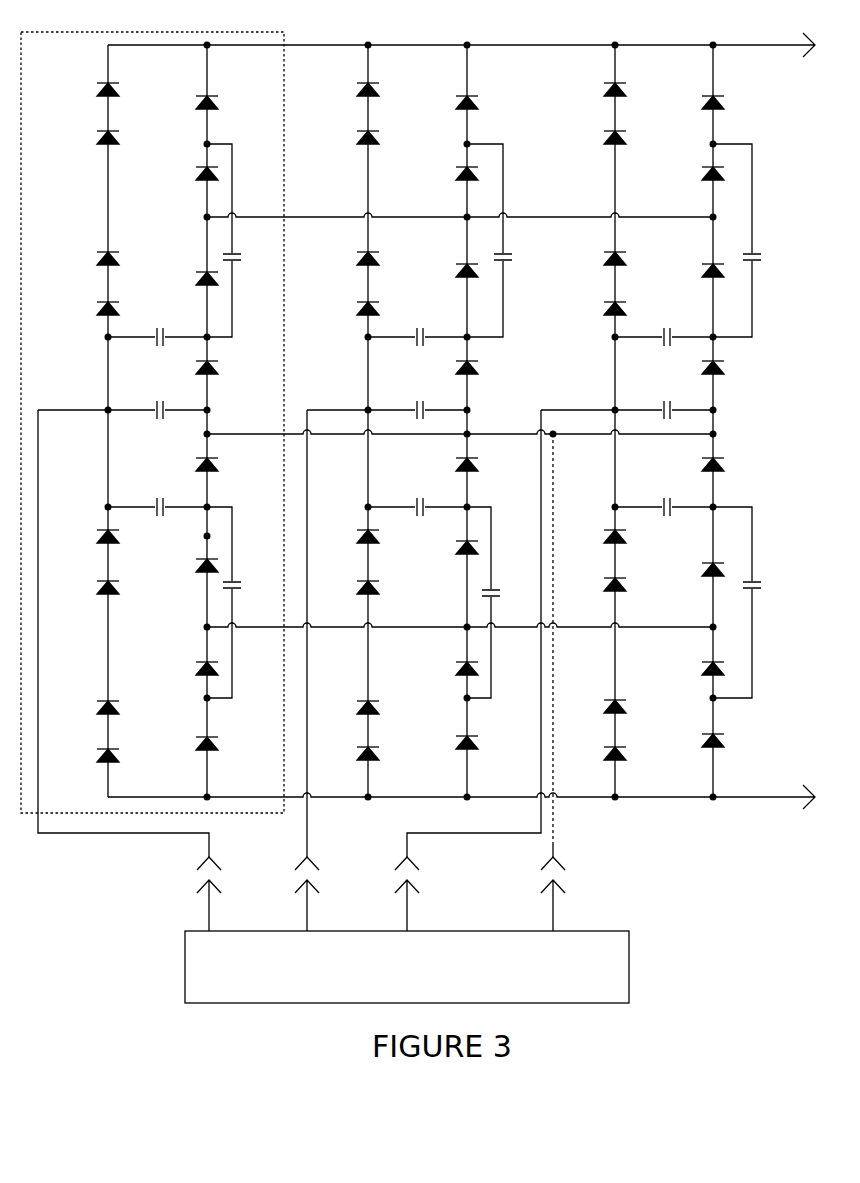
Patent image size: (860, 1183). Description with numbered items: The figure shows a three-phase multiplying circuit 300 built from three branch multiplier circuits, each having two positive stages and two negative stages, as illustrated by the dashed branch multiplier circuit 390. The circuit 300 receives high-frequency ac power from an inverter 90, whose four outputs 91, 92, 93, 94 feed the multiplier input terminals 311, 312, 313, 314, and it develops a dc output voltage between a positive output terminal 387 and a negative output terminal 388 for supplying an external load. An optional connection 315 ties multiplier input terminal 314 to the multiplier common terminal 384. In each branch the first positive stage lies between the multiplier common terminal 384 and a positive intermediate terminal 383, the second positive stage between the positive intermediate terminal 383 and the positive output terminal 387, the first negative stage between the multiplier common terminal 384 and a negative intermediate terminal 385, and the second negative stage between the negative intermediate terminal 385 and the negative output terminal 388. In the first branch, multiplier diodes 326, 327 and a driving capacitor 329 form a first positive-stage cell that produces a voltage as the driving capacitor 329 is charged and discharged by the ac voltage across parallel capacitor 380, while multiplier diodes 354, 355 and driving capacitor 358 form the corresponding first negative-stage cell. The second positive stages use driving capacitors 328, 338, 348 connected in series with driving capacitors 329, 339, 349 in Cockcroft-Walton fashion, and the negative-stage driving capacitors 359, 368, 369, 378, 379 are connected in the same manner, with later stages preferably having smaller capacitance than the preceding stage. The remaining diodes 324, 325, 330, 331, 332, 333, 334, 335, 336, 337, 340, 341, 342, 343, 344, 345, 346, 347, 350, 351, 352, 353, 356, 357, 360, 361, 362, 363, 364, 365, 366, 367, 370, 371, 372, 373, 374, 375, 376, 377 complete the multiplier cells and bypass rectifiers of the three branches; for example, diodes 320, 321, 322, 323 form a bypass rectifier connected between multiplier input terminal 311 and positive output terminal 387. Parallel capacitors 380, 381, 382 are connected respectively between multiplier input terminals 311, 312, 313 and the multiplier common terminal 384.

The three-phase multiplying circuit 300 is at (689, 860).
The inverter 90 is at (185, 957).
The AC output 91 is at (208, 922).
The AC output 92 is at (306, 922).
The AC output 93 is at (406, 922).
The AC output 94 is at (552, 922).
The multiplier input terminal 311 is at (207, 857).
The multiplier input terminal 312 is at (306, 857).
The multiplier input terminal 313 is at (404, 857).
The multiplier input terminal 314 is at (552, 857).
The optional connection 315 is at (556, 808).
The diode 320 is at (97, 90).
The diode 321 is at (97, 138).
The diode 322 is at (97, 259).
The diode 323 is at (97, 309).
The diode 324 is at (196, 103).
The diode 325 is at (196, 174).
The multiplier diode 326 is at (196, 279).
The multiplier diode 327 is at (196, 368).
The driving capacitor 328 is at (235, 254).
The driving capacitor 329 is at (153, 330).
The diode 330 is at (357, 90).
The diode 331 is at (357, 138).
The diode 332 is at (357, 259).
The diode 333 is at (357, 309).
The diode 334 is at (456, 103).
The diode 335 is at (456, 174).
The diode 336 is at (456, 269).
The diode 337 is at (456, 368).
The driving capacitor 338 is at (505, 254).
The driving capacitor 339 is at (413, 330).
The diode 340 is at (604, 90).
The diode 341 is at (604, 138).
The diode 342 is at (604, 259).
The diode 343 is at (604, 309).
The diode 344 is at (702, 103).
The diode 345 is at (702, 174).
The diode 346 is at (702, 269).
The diode 347 is at (702, 368).
The driving capacitor 348 is at (754, 254).
The driving capacitor 349 is at (660, 330).
The diode 350 is at (97, 537).
The diode 351 is at (97, 588).
The diode 352 is at (97, 708).
The diode 353 is at (97, 756).
The multiplier diode 354 is at (196, 465).
The multiplier diode 355 is at (196, 566).
The diode 356 is at (196, 669).
The diode 357 is at (196, 744).
The driving capacitor 358 is at (153, 500).
The capacitor 359 is at (235, 580).
The diode 360 is at (357, 536).
The diode 361 is at (357, 587).
The diode 362 is at (357, 707).
The diode 363 is at (357, 753).
The diode 364 is at (456, 465).
The diode 365 is at (456, 548).
The diode 366 is at (456, 669).
The diode 367 is at (456, 743).
The capacitor 368 is at (413, 500).
The capacitor 369 is at (493, 588).
The diode 370 is at (604, 537).
The diode 371 is at (604, 585).
The diode 372 is at (606, 704).
The diode 373 is at (606, 752).
The diode 374 is at (702, 465).
The diode 375 is at (702, 570).
The diode 376 is at (702, 669).
The diode 377 is at (702, 741).
The capacitor 378 is at (660, 500).
The capacitor 379 is at (755, 580).
The parallel capacitor 380 is at (153, 403).
The parallel capacitor 381 is at (413, 403).
The parallel capacitor 382 is at (660, 403).
The positive intermediate terminal 383 is at (396, 216).
The multiplier common terminal 384 is at (216, 433).
The negative intermediate terminal 385 is at (396, 626).
The positive output terminal 387 is at (778, 45).
The negative output terminal 388 is at (778, 797).
The branch multiplier circuit 390 is at (272, 32).